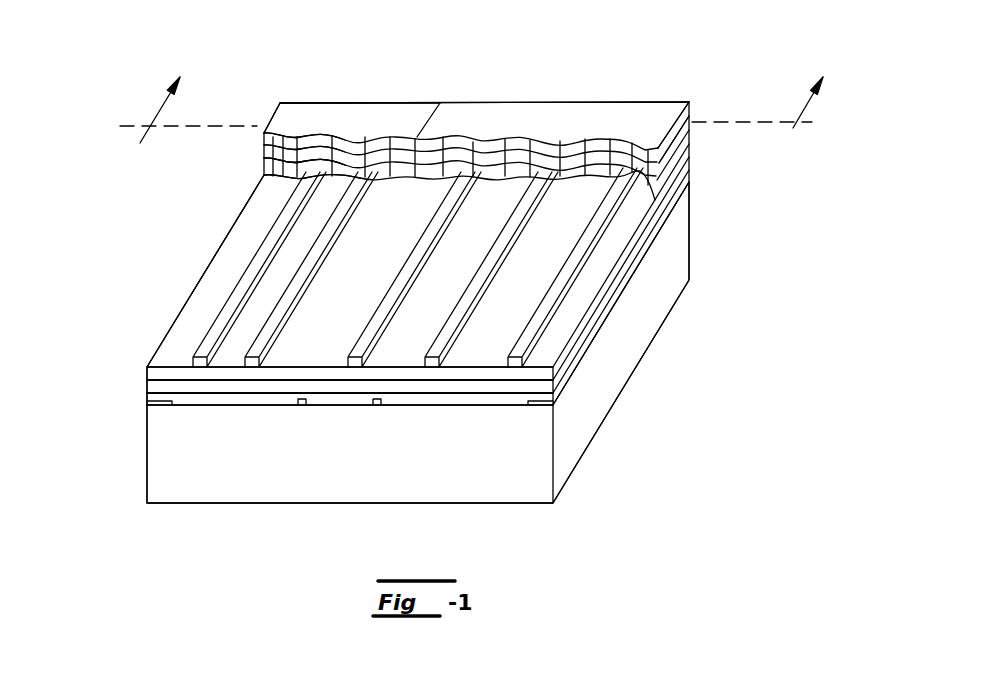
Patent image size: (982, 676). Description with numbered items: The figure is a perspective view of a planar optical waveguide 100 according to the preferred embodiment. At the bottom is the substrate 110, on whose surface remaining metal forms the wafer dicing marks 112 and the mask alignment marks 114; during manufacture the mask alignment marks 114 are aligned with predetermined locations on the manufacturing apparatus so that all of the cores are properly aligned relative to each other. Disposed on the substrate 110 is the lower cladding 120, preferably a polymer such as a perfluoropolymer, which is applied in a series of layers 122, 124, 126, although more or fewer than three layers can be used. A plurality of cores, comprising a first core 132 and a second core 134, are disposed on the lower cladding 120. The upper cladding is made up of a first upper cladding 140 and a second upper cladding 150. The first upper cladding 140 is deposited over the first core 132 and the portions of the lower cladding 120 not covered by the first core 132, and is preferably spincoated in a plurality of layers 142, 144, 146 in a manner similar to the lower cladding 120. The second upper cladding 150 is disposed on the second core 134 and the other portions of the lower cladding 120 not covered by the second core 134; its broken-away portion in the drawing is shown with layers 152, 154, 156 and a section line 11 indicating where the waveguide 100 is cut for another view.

The planar optical waveguide 100 is at (388, 64).
The section line 11 is at (465, 110).
The substrate 110 is at (143, 472).
The wafer dicing marks 112 is at (147, 410).
The mask alignment marks 114 is at (302, 405).
The lower cladding 120 is at (145, 369).
The lower cladding layer 122 is at (691, 183).
The lower cladding layer 124 is at (691, 166).
The lower cladding layer 126 is at (162, 342).
The first core 132 is at (452, 222).
The second core 134 is at (255, 255).
The first upper cladding 140 is at (692, 142).
The first upper cladding layer 142 is at (690, 155).
The first upper cladding layer 144 is at (662, 140).
The first upper cladding layer 146 is at (557, 103).
The second upper cladding 150 is at (263, 133).
The layer 152 is at (262, 176).
The layer 154 is at (290, 140).
The layer 156 is at (305, 103).